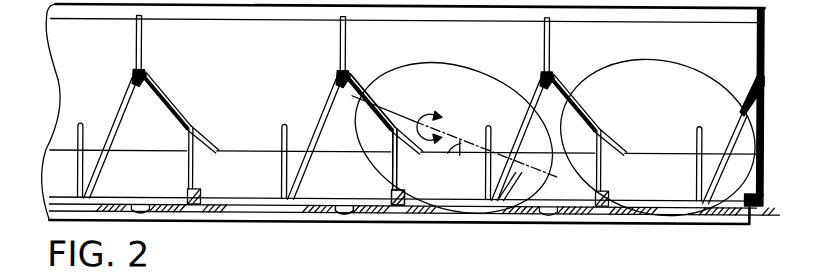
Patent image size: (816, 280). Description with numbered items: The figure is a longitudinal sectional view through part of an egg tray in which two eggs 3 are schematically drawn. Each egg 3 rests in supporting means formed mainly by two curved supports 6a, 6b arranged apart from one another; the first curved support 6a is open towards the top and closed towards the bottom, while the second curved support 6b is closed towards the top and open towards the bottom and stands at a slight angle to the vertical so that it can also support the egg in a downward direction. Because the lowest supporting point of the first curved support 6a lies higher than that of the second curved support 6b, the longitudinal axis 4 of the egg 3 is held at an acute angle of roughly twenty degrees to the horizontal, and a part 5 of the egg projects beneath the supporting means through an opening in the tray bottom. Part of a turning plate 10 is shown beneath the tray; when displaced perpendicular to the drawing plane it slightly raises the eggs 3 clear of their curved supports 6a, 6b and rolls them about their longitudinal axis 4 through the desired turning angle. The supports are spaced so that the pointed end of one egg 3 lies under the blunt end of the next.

The egg 3 is at (466, 70).
The longitudinal axis 4 is at (368, 101).
The part of the egg 5 is at (469, 212).
The first curved support 6a is at (395, 166).
The second curved support 6b is at (507, 180).
The turning plate 10 is at (316, 211).